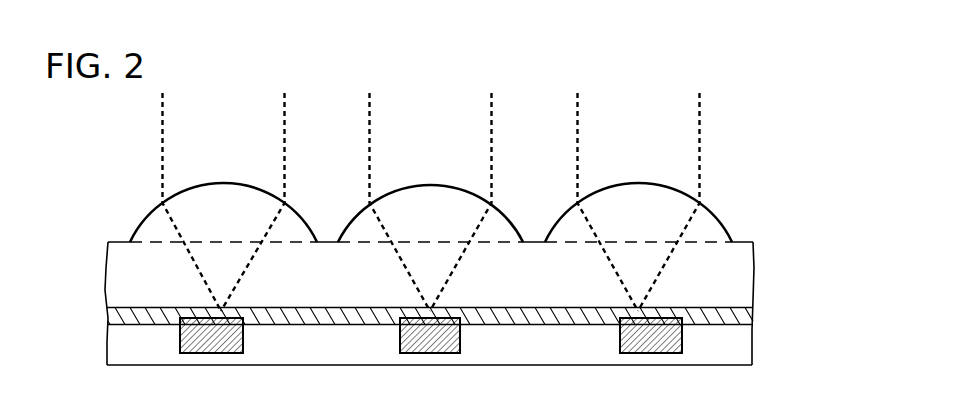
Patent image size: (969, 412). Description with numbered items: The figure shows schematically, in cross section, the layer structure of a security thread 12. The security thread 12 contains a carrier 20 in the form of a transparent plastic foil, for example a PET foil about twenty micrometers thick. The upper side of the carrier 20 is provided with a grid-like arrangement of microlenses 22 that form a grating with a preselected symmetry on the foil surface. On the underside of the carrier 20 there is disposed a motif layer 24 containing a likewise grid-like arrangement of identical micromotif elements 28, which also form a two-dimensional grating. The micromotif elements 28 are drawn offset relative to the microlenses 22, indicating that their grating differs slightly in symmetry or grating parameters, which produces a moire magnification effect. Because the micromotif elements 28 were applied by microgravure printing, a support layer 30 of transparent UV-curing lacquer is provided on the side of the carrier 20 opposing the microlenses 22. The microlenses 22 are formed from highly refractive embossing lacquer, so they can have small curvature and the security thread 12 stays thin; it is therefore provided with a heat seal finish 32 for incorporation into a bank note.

The security thread 12 is at (122, 221).
The carrier 20 is at (742, 266).
The microlenses 22 is at (712, 213).
The motif layer 24 is at (815, 307).
The micromotif elements 28 is at (211, 347).
The support layer 30 is at (742, 316).
The heat seal finish 32 is at (742, 344).